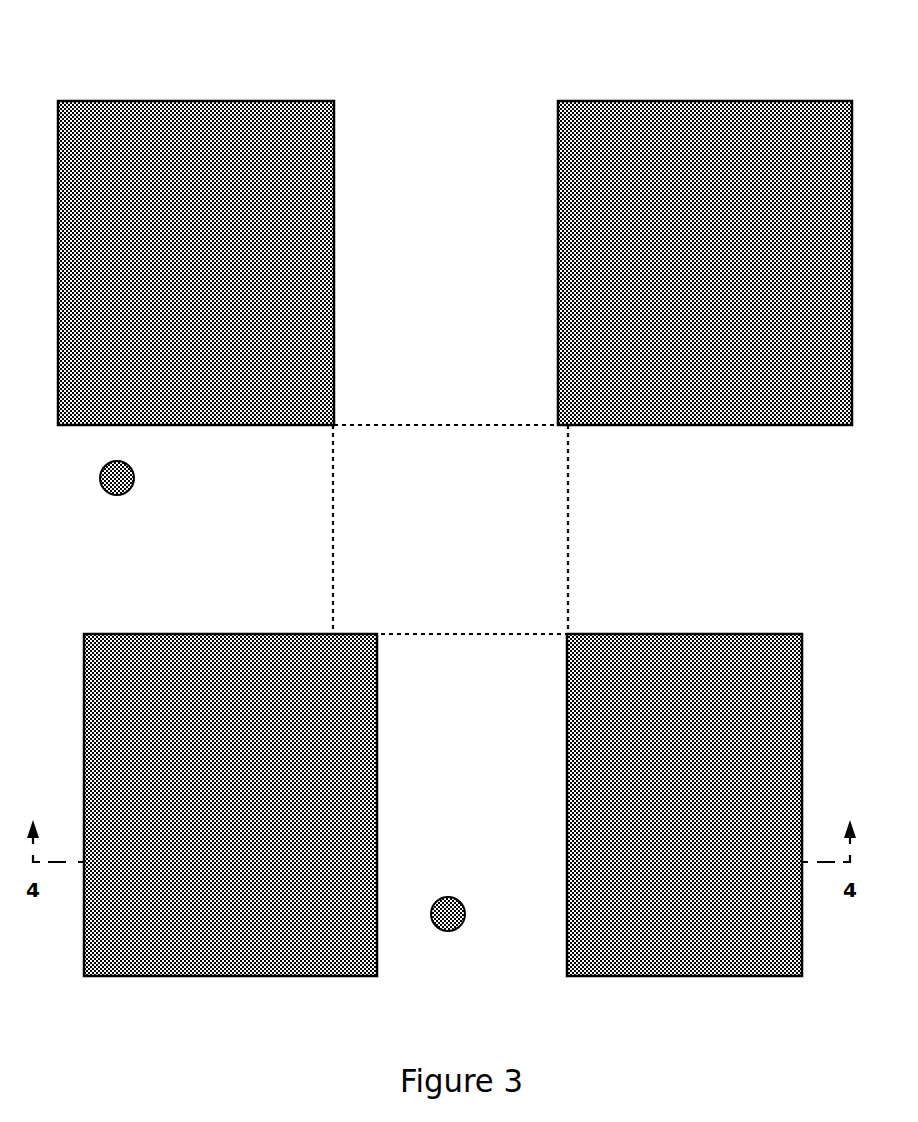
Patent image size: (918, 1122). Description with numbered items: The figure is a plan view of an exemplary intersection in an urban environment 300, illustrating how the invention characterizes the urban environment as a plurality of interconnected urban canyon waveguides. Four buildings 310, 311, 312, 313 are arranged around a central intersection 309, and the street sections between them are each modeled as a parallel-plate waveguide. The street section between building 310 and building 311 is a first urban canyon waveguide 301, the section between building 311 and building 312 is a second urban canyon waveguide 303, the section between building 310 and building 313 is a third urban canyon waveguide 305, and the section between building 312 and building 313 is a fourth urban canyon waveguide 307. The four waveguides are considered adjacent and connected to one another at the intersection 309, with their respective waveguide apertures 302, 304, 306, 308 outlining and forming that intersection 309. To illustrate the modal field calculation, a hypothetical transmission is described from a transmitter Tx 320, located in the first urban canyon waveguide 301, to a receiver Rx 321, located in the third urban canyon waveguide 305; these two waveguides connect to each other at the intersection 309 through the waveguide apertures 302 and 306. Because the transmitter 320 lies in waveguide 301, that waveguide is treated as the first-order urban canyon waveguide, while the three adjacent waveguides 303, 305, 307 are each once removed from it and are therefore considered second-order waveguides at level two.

The urban environment 300 is at (617, 64).
The first urban canyon waveguide 301 is at (483, 825).
The waveguide aperture 302 is at (500, 635).
The second urban canyon waveguide 303 is at (737, 533).
The waveguide aperture 304 is at (570, 512).
The third urban canyon waveguide 305 is at (184, 533).
The waveguide aperture 306 is at (331, 510).
The fourth urban canyon waveguide 307 is at (463, 206).
The waveguide aperture 308 is at (479, 424).
The intersection 309 is at (453, 531).
The building 310 is at (230, 805).
The building 311 is at (684, 805).
The building 312 is at (705, 263).
The building 313 is at (196, 263).
The transmitter Tx 320 is at (466, 913).
The receiver Rx 321 is at (98, 480).